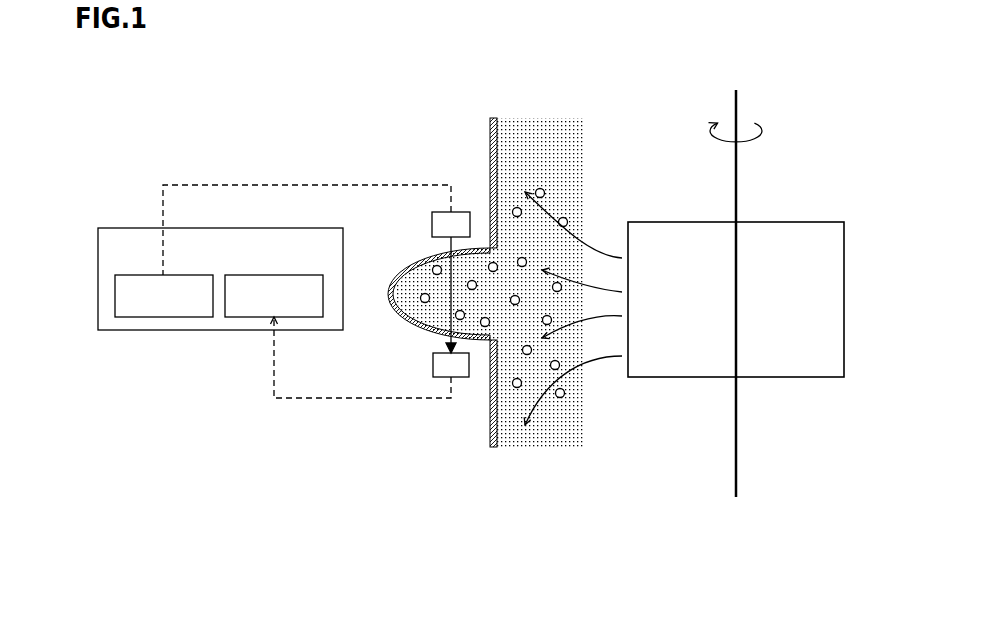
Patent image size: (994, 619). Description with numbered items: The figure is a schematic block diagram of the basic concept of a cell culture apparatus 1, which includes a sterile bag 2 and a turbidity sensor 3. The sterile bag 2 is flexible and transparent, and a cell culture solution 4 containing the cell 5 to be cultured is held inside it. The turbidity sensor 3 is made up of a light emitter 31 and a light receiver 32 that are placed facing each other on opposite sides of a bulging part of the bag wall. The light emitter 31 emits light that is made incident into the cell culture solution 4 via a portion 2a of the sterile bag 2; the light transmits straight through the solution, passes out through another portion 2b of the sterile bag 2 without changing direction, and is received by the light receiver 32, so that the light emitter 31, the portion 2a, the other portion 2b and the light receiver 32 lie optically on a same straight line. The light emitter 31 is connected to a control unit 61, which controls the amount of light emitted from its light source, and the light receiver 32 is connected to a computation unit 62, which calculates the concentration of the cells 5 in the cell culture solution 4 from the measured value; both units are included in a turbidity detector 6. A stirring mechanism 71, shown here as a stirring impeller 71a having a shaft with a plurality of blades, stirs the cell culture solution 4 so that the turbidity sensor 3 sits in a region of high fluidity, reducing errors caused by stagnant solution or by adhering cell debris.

The cell culture apparatus 1 is at (352, 132).
The sterile bag 2 is at (488, 131).
The portion of the sterile bag 2a is at (440, 245).
The another portion of the sterile bag 2b is at (440, 348).
The turbidity sensor 3 is at (468, 200).
The light emitter 31 is at (432, 223).
The light receiver 32 is at (433, 367).
The cell culture solution 4 is at (565, 150).
The cell 5 is at (546, 192).
The turbidity detector 6 is at (130, 228).
The control unit 61 is at (175, 274).
The computation unit 62 is at (277, 274).
The stirring mechanism 71 is at (747, 293).
The stirring impeller 71a is at (802, 190).